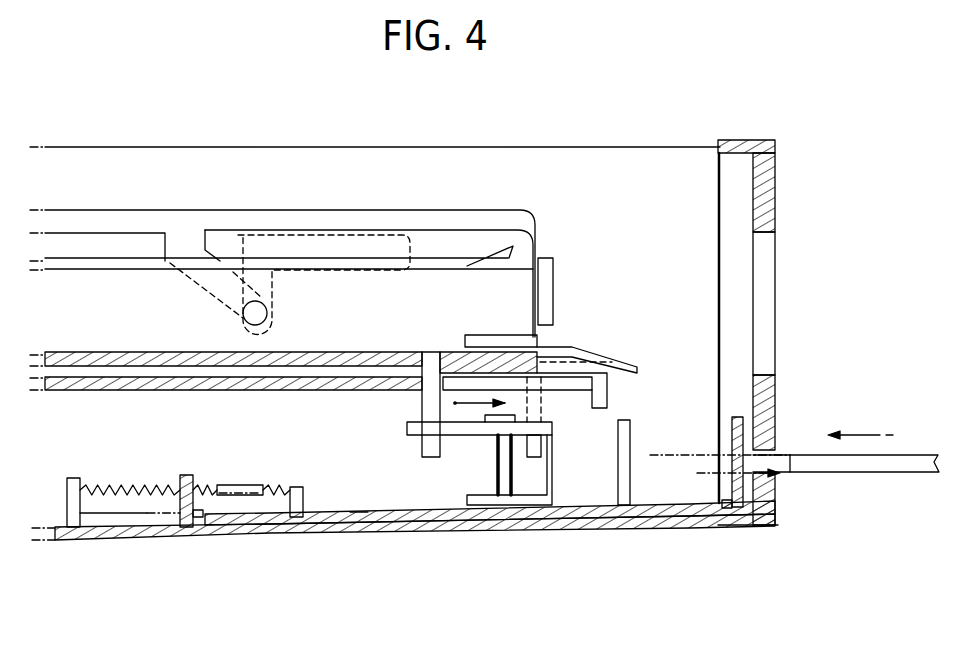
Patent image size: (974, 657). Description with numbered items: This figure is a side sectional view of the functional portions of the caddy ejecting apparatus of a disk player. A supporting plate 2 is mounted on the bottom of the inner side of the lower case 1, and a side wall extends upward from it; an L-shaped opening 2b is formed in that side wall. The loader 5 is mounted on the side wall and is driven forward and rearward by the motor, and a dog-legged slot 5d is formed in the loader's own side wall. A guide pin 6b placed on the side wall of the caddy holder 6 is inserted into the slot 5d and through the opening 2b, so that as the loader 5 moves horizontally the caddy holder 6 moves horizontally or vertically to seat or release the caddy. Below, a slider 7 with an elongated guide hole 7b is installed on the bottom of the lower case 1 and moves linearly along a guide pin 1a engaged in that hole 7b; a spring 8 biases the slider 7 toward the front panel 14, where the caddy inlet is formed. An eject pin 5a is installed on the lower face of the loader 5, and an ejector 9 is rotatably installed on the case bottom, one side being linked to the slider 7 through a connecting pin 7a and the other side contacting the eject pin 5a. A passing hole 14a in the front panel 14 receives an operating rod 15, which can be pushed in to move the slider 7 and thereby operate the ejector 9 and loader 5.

The lower case 1 is at (65, 537).
The guide pin 1a is at (290, 517).
The supporting plate 2 is at (198, 226).
The L-shaped opening 2b is at (337, 247).
The loader 5 is at (150, 252).
The eject pin 5a is at (427, 458).
The dog-legged slot 5d is at (213, 287).
The caddy holder 6 is at (100, 300).
The guide pin 6b is at (258, 297).
The slider 7 is at (680, 527).
The connecting pin 7a is at (500, 477).
The elongated guide hole 7b is at (358, 513).
The spring 8 is at (206, 500).
The ejector 9 is at (559, 479).
The front panel 14 is at (768, 165).
The passing hole 14a is at (778, 478).
The operating rod 15 is at (900, 455).